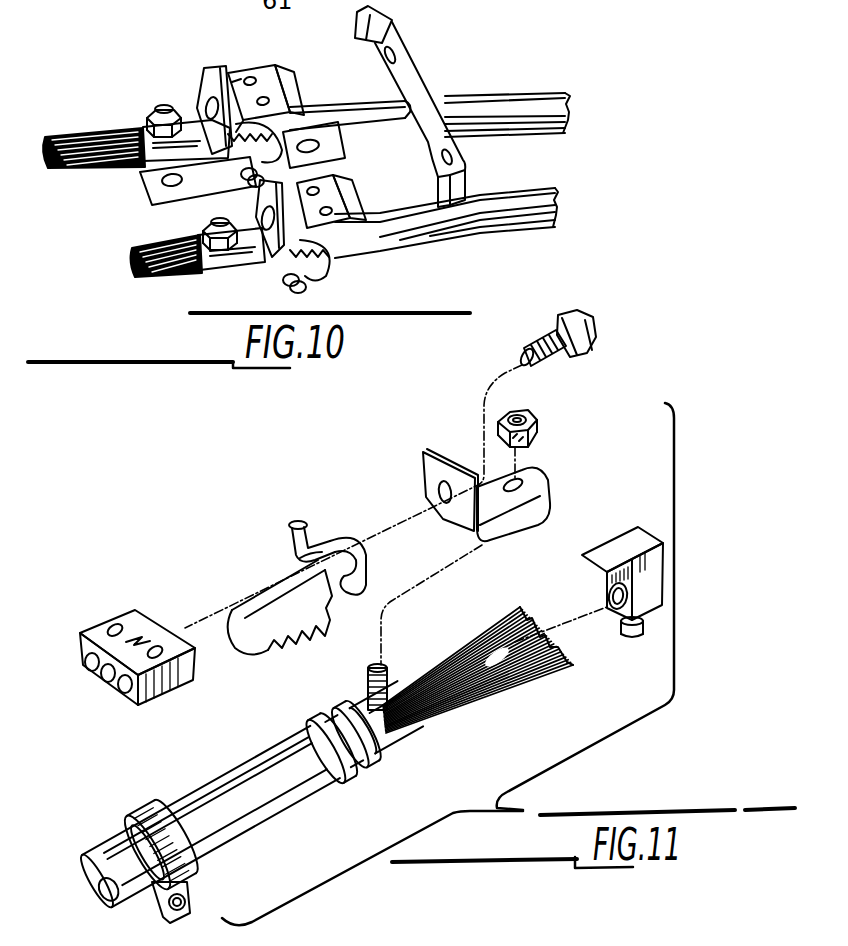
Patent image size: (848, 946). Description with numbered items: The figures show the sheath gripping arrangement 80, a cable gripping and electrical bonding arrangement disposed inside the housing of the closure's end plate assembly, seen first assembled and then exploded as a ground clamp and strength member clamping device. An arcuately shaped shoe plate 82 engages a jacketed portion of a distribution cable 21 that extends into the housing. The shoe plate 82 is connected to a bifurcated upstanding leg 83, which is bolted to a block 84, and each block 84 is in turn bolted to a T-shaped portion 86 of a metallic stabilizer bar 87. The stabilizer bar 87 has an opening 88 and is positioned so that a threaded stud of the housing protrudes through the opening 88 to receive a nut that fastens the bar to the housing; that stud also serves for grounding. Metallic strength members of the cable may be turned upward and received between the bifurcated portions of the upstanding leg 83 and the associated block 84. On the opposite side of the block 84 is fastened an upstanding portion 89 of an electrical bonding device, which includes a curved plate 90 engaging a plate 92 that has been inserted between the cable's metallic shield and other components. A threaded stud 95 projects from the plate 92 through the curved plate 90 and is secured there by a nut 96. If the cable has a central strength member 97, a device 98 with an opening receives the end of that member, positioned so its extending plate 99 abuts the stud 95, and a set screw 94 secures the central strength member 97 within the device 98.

In FIG. 11, the distribution cable 21 is at (236, 768).
In FIG. 10, the sheath gripping arrangement 80 is at (398, 264).
In FIG. 10, the shoe plate 82 is at (265, 118).
In FIG. 11, the shoe plate 82 is at (258, 641).
In FIG. 10, the bifurcated upstanding leg 83 is at (220, 72).
In FIG. 11, the bifurcated upstanding leg 83 is at (366, 577).
In FIG. 10, the block 84 is at (260, 78).
In FIG. 11, the block 84 is at (148, 625).
In FIG. 10, the T-shaped portion 86 is at (372, 25).
In FIG. 10, the stabilizer bar 87 is at (430, 83).
In FIG. 10, the opening 88 is at (312, 150).
In FIG. 11, the upstanding portion 89 is at (440, 455).
In FIG. 10, the curved plate 90 is at (137, 166).
In FIG. 11, the curved plate 90 is at (528, 510).
In FIG. 11, the plate 92 is at (398, 730).
In FIG. 11, the set screw 94 is at (632, 638).
In FIG. 11, the threaded stud 95 is at (387, 667).
In FIG. 11, the nut 96 is at (535, 418).
In FIG. 11, the central strength member 97 is at (477, 668).
In FIG. 11, the device 98 is at (606, 585).
In FIG. 11, the extending plate 99 is at (615, 545).